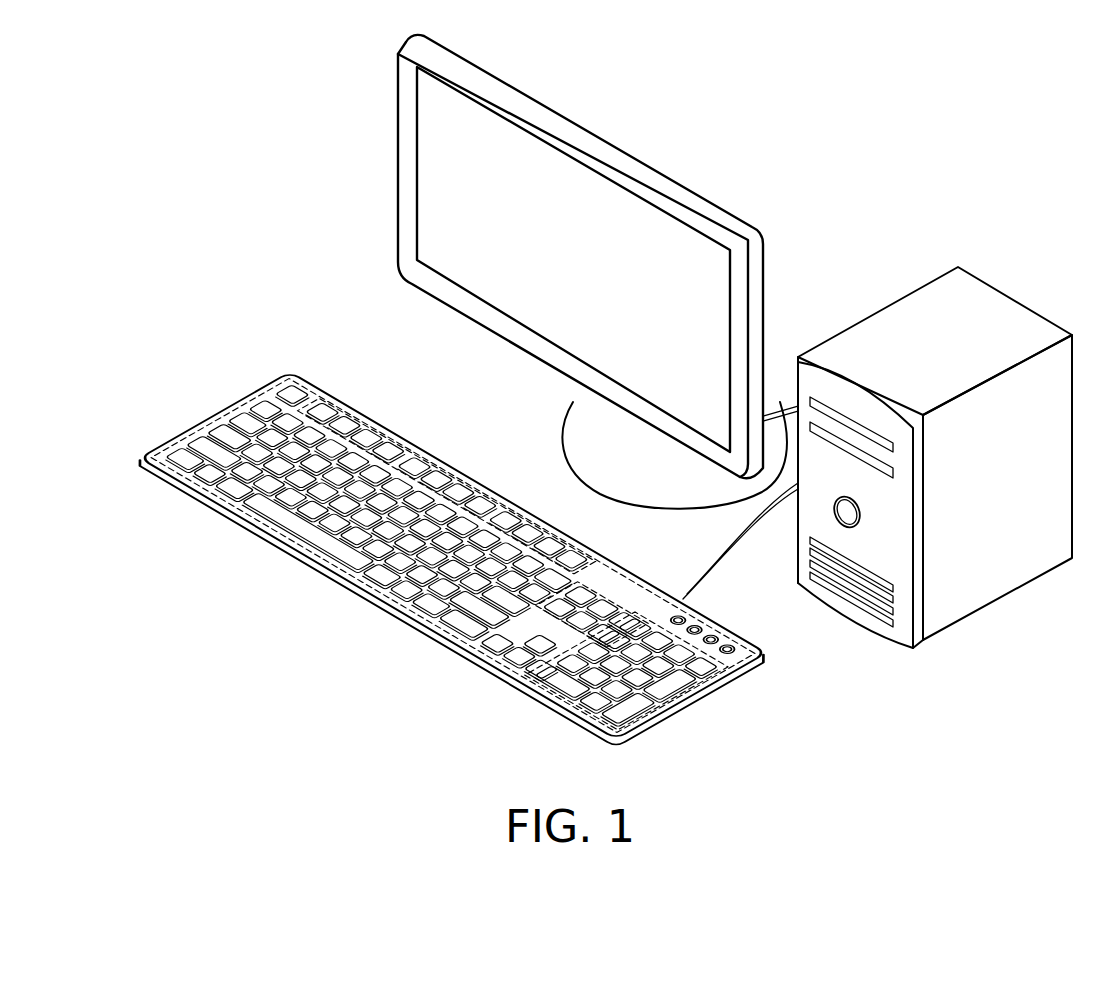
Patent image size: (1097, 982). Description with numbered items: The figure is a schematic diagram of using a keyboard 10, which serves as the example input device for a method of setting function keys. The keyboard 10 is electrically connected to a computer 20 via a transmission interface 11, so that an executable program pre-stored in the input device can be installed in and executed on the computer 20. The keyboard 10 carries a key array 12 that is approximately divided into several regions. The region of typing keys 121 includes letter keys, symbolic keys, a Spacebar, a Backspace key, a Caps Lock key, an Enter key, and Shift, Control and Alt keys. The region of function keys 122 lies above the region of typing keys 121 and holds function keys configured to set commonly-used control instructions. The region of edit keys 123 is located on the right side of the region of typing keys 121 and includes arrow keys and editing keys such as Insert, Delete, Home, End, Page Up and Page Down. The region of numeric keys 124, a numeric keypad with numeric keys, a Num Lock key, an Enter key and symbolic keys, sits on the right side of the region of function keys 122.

The keyboard 10 is at (183, 376).
The transmission interface 11 is at (717, 571).
The key array 12 is at (274, 370).
The region of typing keys 121 is at (330, 566).
The region of function keys 122 is at (352, 413).
The region of edit keys 123 is at (612, 598).
The region of numeric keys 124 is at (687, 692).
The computer 20 is at (912, 166).